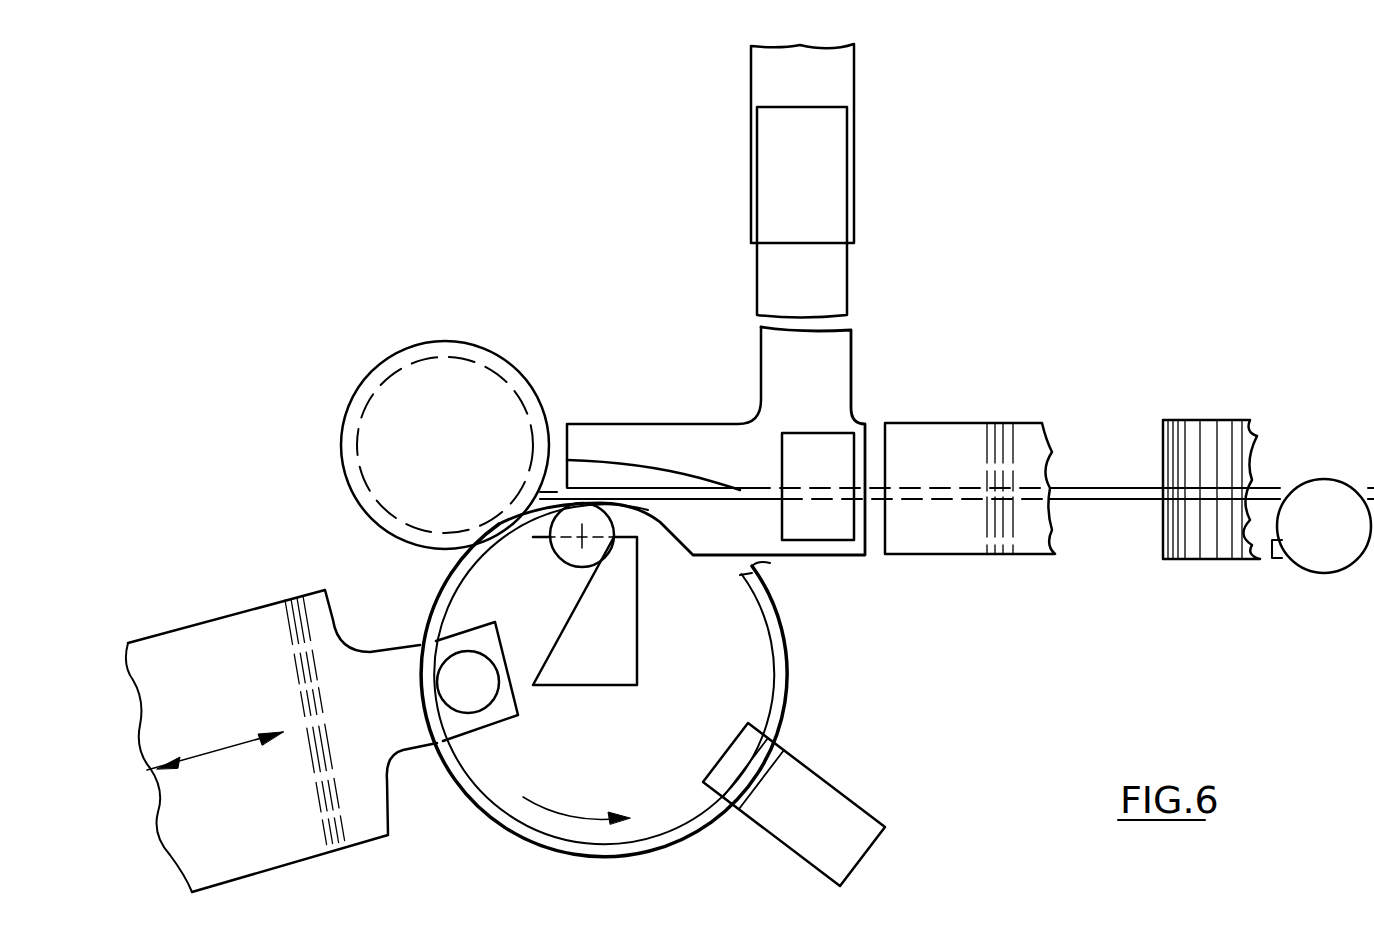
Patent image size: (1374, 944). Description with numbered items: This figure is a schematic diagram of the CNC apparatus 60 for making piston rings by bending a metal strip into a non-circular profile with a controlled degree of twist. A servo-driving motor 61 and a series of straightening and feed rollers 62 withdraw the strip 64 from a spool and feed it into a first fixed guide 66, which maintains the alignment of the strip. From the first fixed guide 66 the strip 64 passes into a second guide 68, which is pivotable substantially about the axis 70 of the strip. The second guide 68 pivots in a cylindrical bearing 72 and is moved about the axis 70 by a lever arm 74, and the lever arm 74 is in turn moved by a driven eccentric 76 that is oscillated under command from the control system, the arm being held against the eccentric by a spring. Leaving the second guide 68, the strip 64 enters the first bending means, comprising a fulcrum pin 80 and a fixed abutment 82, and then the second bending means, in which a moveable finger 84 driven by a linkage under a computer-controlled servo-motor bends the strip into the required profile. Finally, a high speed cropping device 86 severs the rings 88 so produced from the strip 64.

The CNC apparatus 60 is at (962, 303).
The servo-driving motor 61 is at (1328, 553).
The straightening and feed rollers 62 is at (1238, 432).
The strip 64 is at (1090, 487).
The first fixed guide 66 is at (945, 442).
The second guide 68 is at (745, 442).
The axis 70 is at (838, 497).
The cylindrical bearing 72 is at (826, 442).
The lever arm 74 is at (835, 270).
The driven eccentric 76 is at (855, 172).
The fulcrum pin 80 is at (600, 555).
The fixed abutment 82 is at (497, 427).
The moveable finger 84 is at (482, 697).
The high speed cropping device 86 is at (815, 810).
The rings 88 is at (560, 843).